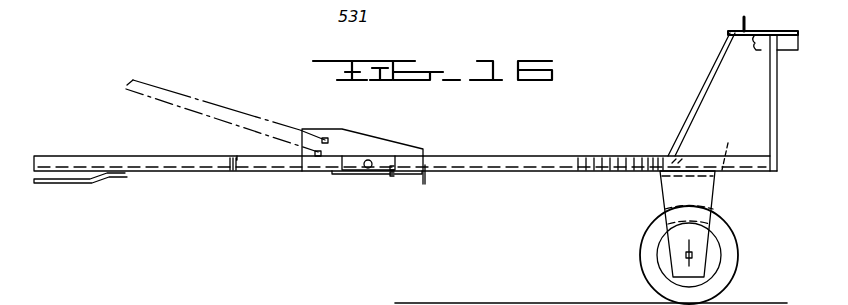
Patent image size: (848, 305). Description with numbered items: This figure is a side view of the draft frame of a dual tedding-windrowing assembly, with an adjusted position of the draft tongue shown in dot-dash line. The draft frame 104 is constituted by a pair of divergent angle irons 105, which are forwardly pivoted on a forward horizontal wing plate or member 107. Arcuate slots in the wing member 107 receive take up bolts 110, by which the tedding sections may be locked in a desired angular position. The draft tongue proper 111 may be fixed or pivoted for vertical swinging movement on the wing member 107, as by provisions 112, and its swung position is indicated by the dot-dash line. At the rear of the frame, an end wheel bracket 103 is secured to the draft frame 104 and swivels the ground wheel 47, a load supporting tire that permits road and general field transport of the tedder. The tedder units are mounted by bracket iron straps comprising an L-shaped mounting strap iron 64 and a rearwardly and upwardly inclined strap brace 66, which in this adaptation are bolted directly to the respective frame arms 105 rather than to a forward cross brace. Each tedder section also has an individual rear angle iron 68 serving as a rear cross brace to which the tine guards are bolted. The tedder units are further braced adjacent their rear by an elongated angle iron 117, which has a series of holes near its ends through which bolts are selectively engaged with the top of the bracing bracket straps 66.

The ground wheel 47 is at (650, 257).
The L-shaped mounting strap iron 64 is at (770, 106).
The inclined strap brace 66 is at (714, 70).
The rear angle iron 68 is at (764, 44).
The end wheel bracket 103 is at (704, 201).
The draft frame 104 is at (579, 153).
The divergent angle iron 105 is at (553, 168).
The forward horizontal wing plate 107 is at (416, 174).
The take up bolt 110 is at (410, 152).
The draft tongue 111 is at (223, 118).
The pivot provisions 112 is at (352, 187).
The elongated angle iron 117 is at (754, 30).